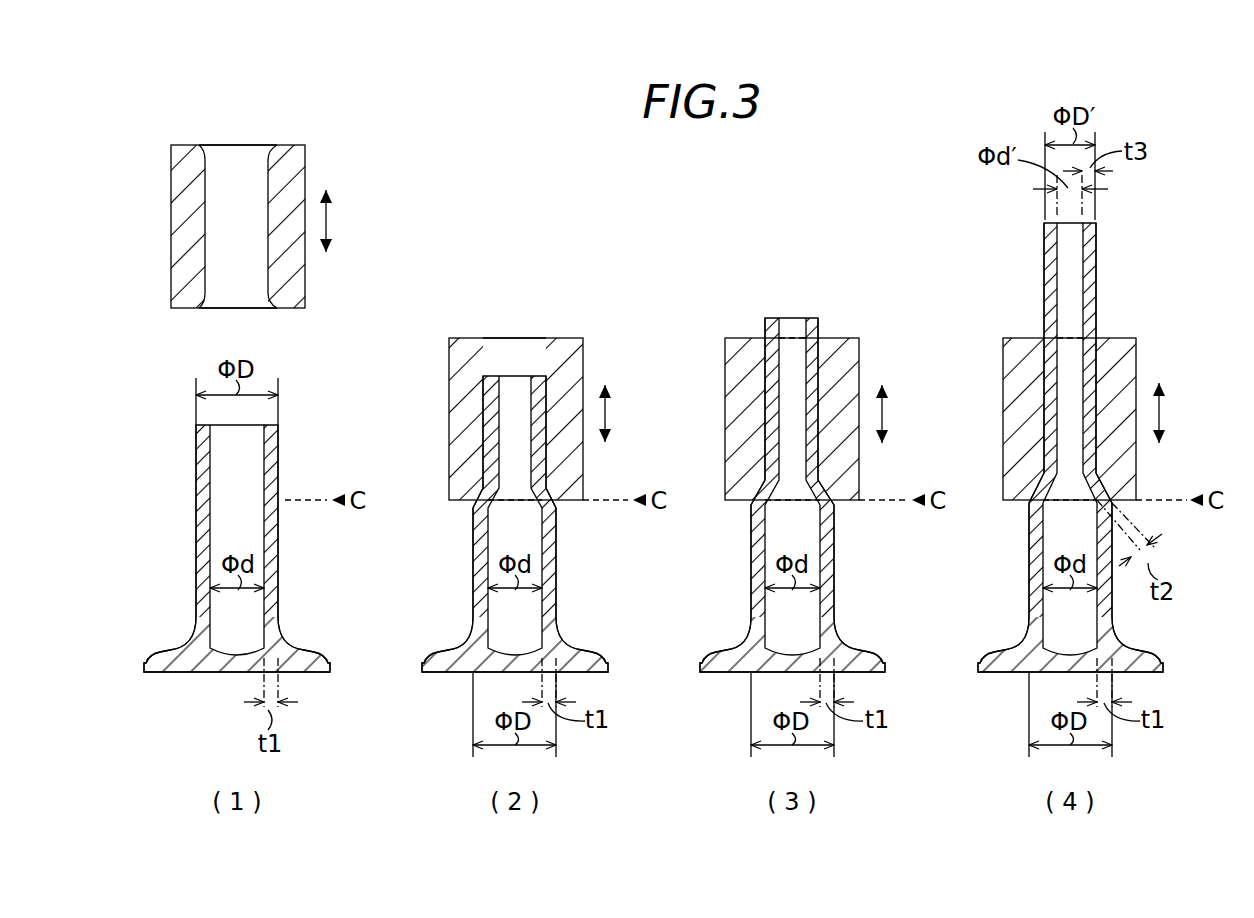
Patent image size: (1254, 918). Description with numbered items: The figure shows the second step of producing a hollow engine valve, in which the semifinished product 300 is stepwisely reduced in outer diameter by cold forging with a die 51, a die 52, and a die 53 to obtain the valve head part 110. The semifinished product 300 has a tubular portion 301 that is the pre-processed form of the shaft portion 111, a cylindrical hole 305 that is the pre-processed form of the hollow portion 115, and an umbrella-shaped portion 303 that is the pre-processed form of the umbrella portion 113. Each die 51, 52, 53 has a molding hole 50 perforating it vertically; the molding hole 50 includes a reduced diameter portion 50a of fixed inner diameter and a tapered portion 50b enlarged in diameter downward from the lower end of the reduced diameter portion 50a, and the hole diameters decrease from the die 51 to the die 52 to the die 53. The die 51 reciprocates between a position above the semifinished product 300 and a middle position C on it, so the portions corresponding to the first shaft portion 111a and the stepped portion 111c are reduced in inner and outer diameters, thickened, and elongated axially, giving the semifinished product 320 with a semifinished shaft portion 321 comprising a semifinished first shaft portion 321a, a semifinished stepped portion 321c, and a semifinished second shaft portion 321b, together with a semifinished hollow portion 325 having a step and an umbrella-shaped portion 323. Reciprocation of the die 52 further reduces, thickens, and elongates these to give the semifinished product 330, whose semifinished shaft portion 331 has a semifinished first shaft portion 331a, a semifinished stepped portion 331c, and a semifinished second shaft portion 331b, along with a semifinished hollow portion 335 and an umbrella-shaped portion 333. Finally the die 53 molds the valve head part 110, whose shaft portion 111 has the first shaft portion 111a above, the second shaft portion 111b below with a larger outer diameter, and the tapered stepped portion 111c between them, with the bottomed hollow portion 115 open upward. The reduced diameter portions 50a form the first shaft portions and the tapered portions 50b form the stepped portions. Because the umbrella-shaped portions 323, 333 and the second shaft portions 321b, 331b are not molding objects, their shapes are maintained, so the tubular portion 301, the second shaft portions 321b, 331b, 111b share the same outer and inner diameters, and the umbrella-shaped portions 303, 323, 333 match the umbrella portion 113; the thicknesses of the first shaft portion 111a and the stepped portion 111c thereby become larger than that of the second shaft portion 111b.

The molding hole 50 is at (216, 160).
The reduced diameter portion 50a is at (263, 162).
The tapered portion 50b is at (205, 308).
The die 51 is at (307, 170).
The die 52 is at (843, 336).
The die 53 is at (1120, 335).
The semifinished product 300 is at (230, 525).
The tubular portion 301 is at (196, 550).
The umbrella-shaped portion 303 is at (172, 650).
The cylindrical hole 305 is at (253, 426).
The semifinished product 320 is at (511, 473).
The semifinished shaft portion 321 is at (501, 499).
The semifinished first shaft portion 321a is at (482, 417).
The semifinished second shaft portion 321b is at (473, 549).
The semifinished stepped portion 321c is at (480, 497).
The umbrella-shaped portion 323 is at (448, 652).
The semifinished hollow portion 325 is at (522, 387).
The semifinished product 330 is at (790, 466).
The semifinished shaft portion 331 is at (781, 473).
The semifinished first shaft portion 331a is at (765, 407).
The semifinished second shaft portion 331b is at (751, 549).
The semifinished stepped portion 331c is at (762, 490).
The umbrella-shaped portion 333 is at (728, 652).
The semifinished hollow portion 335 is at (799, 328).
The valve head part 110 is at (1060, 431).
The shaft portion 111 is at (1024, 420).
The first shaft portion 111a is at (1048, 398).
The second shaft portion 111b is at (1029, 566).
The stepped portion 111c is at (1043, 492).
The umbrella portion 113 is at (1128, 650).
The hollow portion 115 is at (1070, 228).